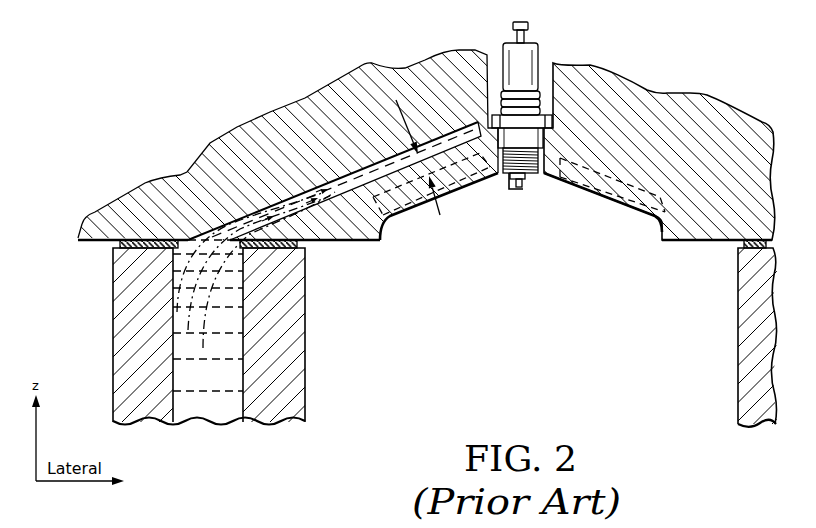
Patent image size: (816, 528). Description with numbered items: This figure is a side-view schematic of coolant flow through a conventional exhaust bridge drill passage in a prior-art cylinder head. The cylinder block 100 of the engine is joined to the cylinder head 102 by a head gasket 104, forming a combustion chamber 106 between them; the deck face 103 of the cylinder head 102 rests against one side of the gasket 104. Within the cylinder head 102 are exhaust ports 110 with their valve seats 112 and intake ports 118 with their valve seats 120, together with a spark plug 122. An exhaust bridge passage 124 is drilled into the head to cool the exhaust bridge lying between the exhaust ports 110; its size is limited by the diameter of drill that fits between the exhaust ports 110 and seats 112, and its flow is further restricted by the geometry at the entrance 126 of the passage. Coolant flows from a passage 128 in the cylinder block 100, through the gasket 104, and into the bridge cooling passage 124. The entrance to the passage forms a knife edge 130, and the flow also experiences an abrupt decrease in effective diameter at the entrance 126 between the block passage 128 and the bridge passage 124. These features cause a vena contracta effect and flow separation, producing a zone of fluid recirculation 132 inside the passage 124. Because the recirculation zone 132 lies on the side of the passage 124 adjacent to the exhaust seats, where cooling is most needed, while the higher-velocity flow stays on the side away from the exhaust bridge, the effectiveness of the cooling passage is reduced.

The cylinder block 100 is at (113, 367).
The cylinder head 102 is at (384, 233).
The deck face of the cylinder head 103 is at (345, 240).
The head gasket 104 is at (105, 238).
The combustion chamber 106 is at (537, 363).
The exhaust ports 110 is at (463, 178).
The valve seats 112 is at (443, 178).
The intake ports 118 is at (606, 183).
The valve seats 120 is at (641, 197).
The spark plug 122 is at (519, 197).
The exhaust bridge passage 124 is at (304, 198).
The entrance to the drill passage 126 is at (187, 228).
The passage in the cylinder block 128 is at (223, 384).
The knife edge 130 is at (306, 290).
The zone of fluid recirculation 132 is at (250, 197).